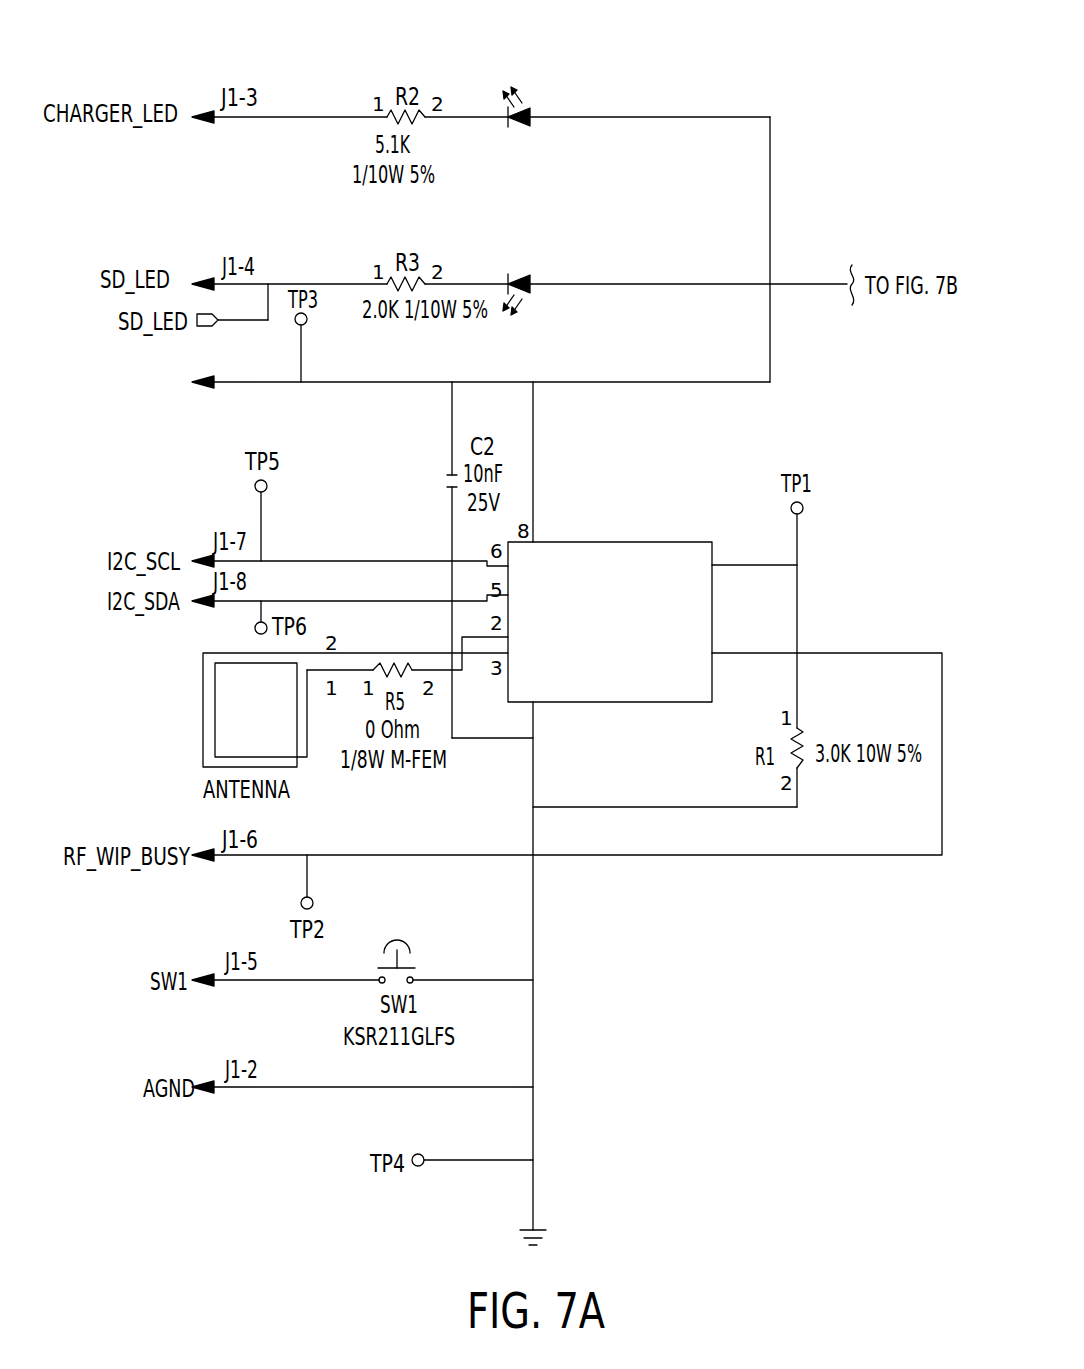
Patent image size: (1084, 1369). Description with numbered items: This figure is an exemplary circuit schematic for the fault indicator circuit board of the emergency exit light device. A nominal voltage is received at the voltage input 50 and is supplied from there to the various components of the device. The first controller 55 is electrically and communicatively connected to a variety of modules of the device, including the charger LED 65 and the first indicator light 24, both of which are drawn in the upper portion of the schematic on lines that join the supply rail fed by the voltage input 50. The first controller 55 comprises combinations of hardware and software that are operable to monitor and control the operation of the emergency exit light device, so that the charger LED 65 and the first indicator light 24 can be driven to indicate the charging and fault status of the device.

The charger LED 65 is at (530, 113).
The first indicator light 24 is at (531, 291).
The voltage input 50 is at (195, 384).
The first controller 55 is at (643, 703).